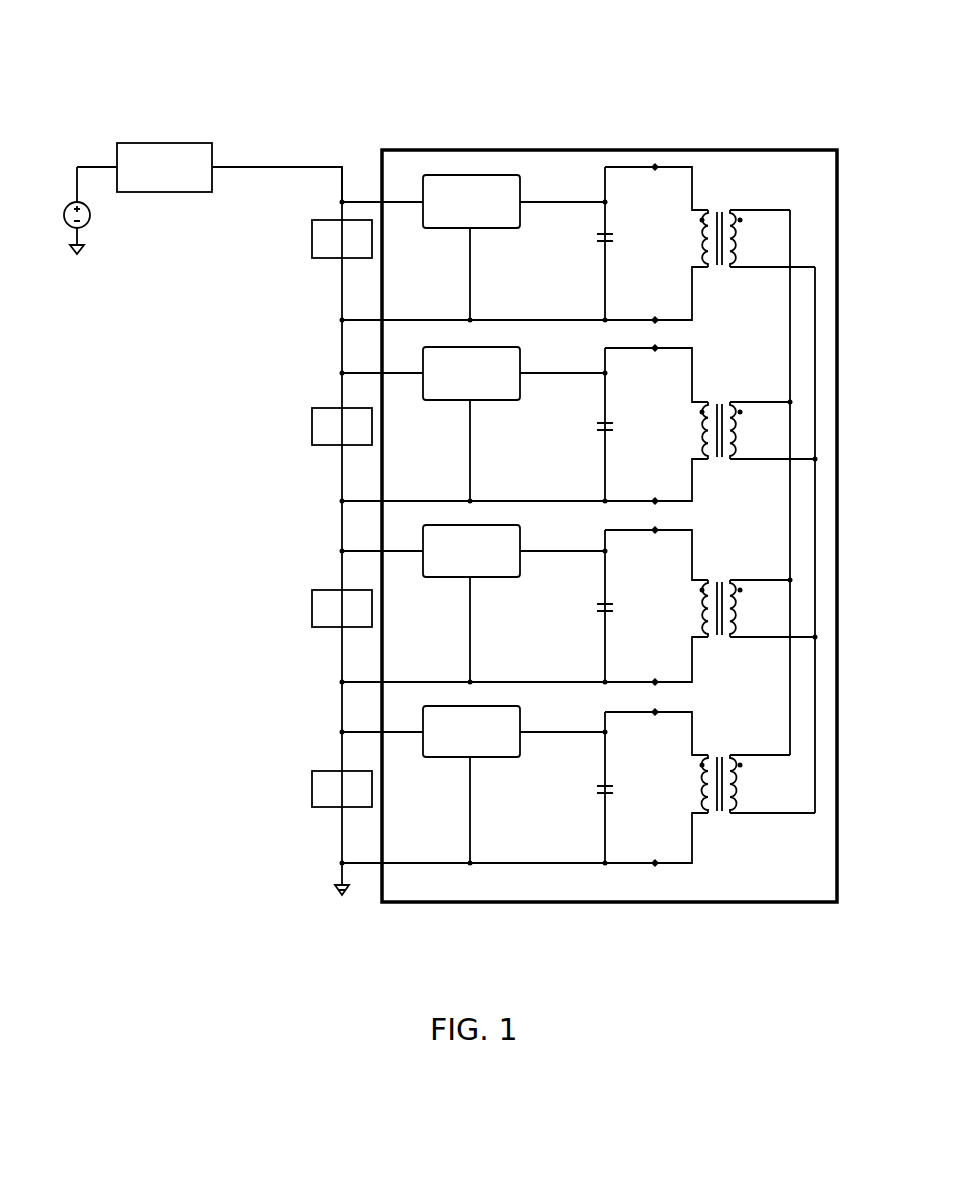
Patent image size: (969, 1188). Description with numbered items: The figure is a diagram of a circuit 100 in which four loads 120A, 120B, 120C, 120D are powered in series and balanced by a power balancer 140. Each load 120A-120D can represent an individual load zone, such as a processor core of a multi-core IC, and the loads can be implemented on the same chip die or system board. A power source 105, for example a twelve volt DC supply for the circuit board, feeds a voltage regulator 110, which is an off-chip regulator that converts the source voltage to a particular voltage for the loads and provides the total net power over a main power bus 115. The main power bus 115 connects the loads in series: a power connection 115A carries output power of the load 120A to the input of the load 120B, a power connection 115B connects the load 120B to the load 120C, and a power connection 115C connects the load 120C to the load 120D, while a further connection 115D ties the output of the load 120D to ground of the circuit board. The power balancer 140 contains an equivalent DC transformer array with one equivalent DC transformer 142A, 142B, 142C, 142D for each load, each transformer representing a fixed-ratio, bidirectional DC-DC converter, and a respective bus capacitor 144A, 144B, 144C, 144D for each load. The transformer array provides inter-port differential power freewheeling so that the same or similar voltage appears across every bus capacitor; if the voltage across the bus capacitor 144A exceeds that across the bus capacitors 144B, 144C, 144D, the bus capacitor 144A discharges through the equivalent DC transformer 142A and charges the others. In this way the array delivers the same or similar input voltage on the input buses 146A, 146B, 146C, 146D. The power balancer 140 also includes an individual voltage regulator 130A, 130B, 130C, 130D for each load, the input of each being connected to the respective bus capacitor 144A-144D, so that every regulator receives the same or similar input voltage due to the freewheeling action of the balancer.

The circuit 100 is at (114, 80).
The power source 105 is at (108, 230).
The voltage regulator 110 is at (206, 122).
The main power bus 115 is at (336, 148).
The power connection 115A is at (330, 306).
The power connection 115B is at (326, 527).
The power connection 115C is at (326, 707).
The connection 115D is at (326, 870).
The load 120A is at (304, 262).
The load 120B is at (305, 447).
The load 120C is at (303, 630).
The load 120D is at (302, 815).
The voltage regulator 130A is at (466, 164).
The voltage regulator 130B is at (456, 406).
The voltage regulator 130C is at (456, 584).
The voltage regulator 130D is at (456, 763).
The power balancer 140 is at (624, 134).
The equivalent DC transformer 142A is at (733, 205).
The equivalent DC transformer 142B is at (752, 395).
The equivalent DC transformer 142C is at (745, 577).
The equivalent DC transformer 142D is at (752, 824).
The bus capacitor 144A is at (652, 228).
The bus capacitor 144B is at (621, 444).
The bus capacitor 144C is at (621, 622).
The bus capacitor 144D is at (618, 808).
The input bus 146A is at (549, 181).
The input bus 146B is at (550, 387).
The input bus 146C is at (552, 562).
The input bus 146D is at (552, 742).